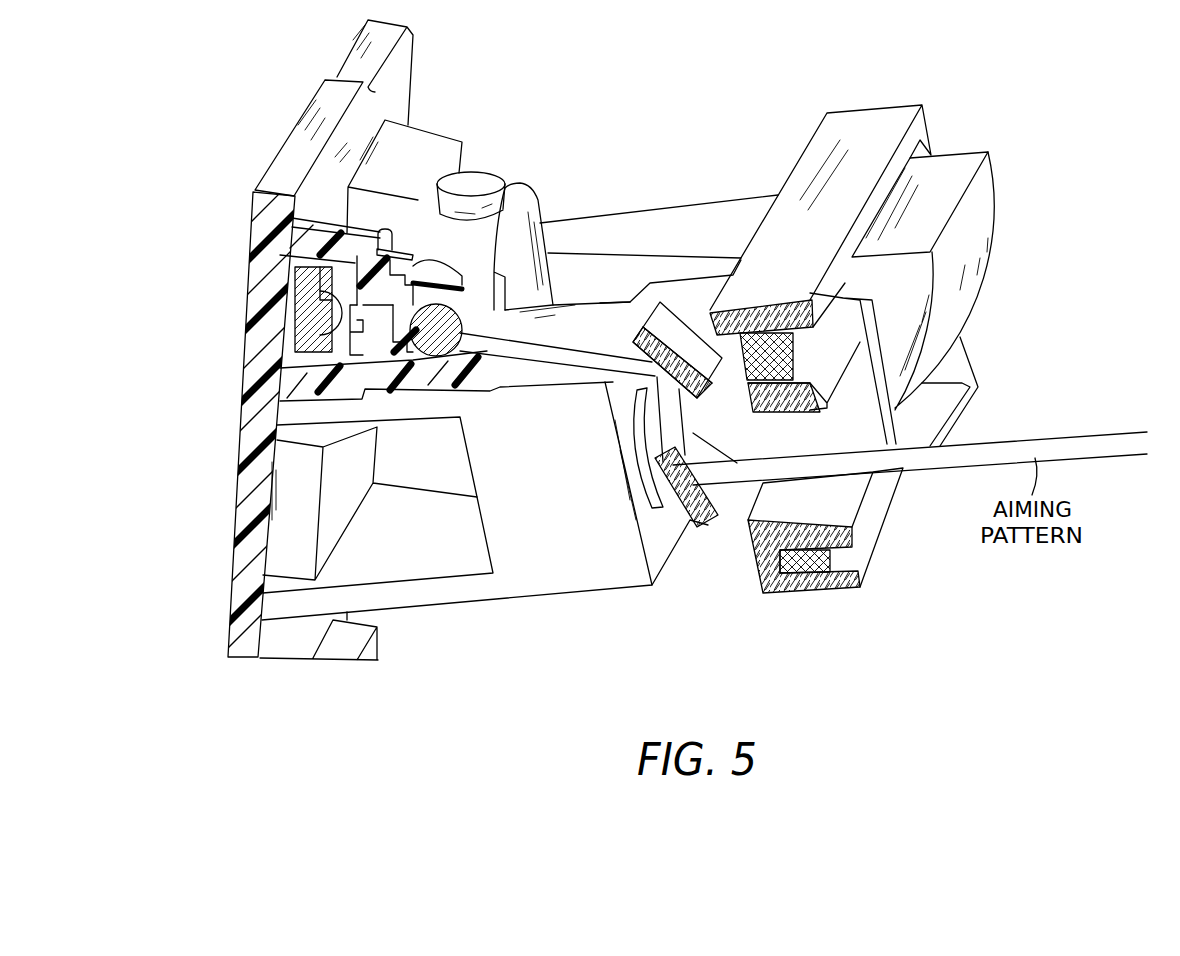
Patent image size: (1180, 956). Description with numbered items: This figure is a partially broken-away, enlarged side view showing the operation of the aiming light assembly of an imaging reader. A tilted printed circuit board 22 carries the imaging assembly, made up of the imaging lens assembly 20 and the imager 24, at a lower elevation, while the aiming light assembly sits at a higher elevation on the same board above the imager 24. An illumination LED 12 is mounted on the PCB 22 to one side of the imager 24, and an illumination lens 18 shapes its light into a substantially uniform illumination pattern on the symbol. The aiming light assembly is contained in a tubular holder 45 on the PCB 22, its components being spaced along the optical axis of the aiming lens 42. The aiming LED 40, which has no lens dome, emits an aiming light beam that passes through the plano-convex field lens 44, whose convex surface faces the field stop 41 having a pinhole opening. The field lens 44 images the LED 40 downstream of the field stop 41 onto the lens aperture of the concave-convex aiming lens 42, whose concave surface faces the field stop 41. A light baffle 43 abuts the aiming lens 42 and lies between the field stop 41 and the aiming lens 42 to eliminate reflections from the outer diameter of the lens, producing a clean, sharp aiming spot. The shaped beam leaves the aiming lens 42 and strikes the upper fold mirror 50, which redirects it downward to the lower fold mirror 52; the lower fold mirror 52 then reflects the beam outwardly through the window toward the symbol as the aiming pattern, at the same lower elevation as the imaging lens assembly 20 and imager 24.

The illumination LED 12 is at (433, 128).
The illumination lens 18 is at (958, 163).
The imaging lens assembly 20 is at (558, 563).
The printed circuit board 22 is at (312, 107).
The imager 24 is at (296, 512).
The aiming light source 40 is at (322, 284).
The field stop 41 is at (360, 265).
The aiming lens 42 is at (450, 290).
The light baffle 43 is at (407, 345).
The field lens 44 is at (328, 310).
The tubular holder 45 is at (292, 373).
The upper fold mirror 50 is at (669, 350).
The lower fold mirror 52 is at (708, 524).